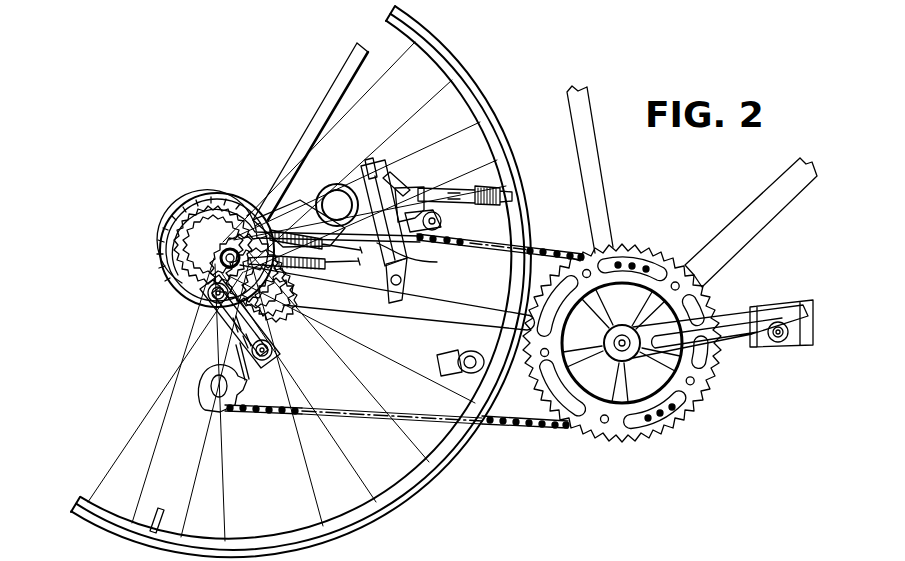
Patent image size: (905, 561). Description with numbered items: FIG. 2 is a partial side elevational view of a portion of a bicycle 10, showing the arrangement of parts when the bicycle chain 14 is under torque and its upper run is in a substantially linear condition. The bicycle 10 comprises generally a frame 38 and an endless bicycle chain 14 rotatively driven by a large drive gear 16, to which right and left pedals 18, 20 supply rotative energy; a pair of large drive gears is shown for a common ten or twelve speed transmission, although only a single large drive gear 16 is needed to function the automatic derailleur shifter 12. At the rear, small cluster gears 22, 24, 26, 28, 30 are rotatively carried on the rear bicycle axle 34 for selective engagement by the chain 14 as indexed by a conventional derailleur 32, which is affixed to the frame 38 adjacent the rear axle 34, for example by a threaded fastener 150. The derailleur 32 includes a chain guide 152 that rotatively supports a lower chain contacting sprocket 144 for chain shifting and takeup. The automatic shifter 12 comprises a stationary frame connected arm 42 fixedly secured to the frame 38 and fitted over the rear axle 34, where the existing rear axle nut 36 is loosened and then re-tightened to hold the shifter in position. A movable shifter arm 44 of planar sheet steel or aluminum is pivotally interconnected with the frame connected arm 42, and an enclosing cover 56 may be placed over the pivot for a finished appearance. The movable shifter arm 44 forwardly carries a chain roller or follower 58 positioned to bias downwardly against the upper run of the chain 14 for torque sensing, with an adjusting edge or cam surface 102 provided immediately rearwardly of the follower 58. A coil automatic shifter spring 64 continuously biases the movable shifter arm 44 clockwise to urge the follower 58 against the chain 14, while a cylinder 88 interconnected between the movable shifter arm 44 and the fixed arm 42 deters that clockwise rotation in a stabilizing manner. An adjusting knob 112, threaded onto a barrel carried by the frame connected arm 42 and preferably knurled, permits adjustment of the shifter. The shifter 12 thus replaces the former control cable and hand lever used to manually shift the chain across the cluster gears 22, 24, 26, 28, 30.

The bicycle 10 is at (600, 98).
The automatic derailleur shifter 12 is at (414, 187).
The bicycle chain 14 is at (517, 424).
The large drive gear 16 is at (564, 426).
The right pedal 18 is at (758, 348).
The left pedal 20 is at (437, 363).
The small cluster gear 22 is at (192, 212).
The small cluster gear 24 is at (172, 259).
The small cluster gear 26 is at (178, 253).
The small cluster gear 28 is at (212, 243).
The small cluster gear 30 is at (284, 305).
The derailleur 32 is at (201, 392).
The rear bicycle axle 34 is at (234, 194).
The rear axle nut 36 is at (178, 297).
The frame 38 is at (437, 307).
The frame connected arm 42 is at (298, 213).
The movable shifter arm 44 is at (380, 158).
The enclosing cover 56 is at (338, 200).
The chain roller or follower 58 is at (455, 232).
The automatic shifter spring 64 is at (297, 264).
The cylinder 88 is at (437, 262).
The adjusting edge or cam surface 102 is at (388, 178).
The adjusting knob 112 is at (467, 192).
The lower chain contacting sprocket 144 is at (244, 413).
The threaded fastener 150 is at (206, 325).
The chain guide 152 is at (212, 411).